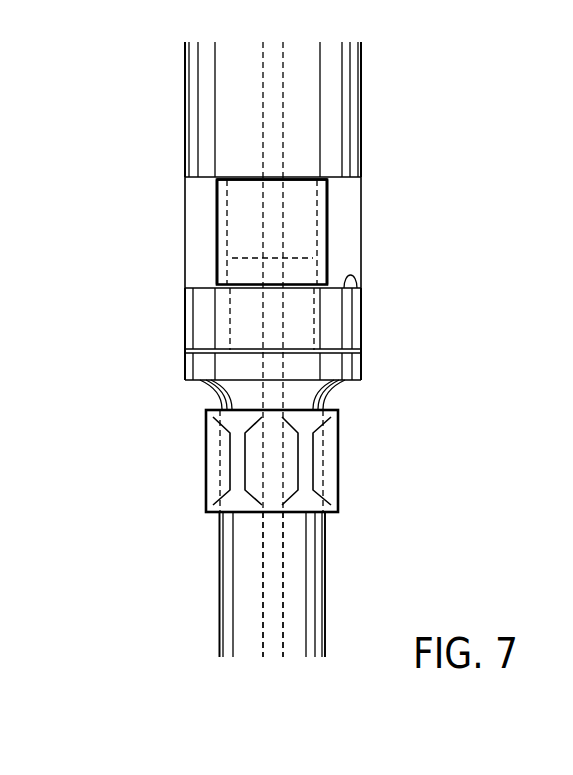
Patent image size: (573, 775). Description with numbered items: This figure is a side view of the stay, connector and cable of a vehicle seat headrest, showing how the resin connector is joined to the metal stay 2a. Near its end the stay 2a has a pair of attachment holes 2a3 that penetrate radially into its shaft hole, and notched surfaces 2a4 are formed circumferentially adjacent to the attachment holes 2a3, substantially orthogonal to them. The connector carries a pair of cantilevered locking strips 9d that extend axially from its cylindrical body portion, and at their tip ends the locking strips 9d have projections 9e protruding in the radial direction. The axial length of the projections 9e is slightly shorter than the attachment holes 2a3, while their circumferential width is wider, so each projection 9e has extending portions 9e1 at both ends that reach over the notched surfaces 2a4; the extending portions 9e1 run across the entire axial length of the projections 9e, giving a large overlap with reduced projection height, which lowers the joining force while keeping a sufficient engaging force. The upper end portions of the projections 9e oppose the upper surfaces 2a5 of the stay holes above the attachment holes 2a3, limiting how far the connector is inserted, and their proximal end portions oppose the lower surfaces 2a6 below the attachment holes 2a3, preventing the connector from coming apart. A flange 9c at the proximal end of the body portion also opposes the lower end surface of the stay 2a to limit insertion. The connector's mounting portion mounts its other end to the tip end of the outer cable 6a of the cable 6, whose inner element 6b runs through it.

The stay 2a is at (168, 113).
The attachment holes 2a3 is at (316, 216).
The notched surfaces 2a4 is at (202, 250).
The upper surfaces 2a5 is at (298, 183).
The lower surfaces 2a6 is at (350, 280).
The cable 6 is at (200, 533).
The outer cable 6a is at (235, 558).
The passage 6b is at (268, 580).
The flange 9c is at (345, 367).
The locking strips 9d is at (247, 312).
The projections 9e is at (296, 207).
The extending portions 9e1 is at (217, 220).